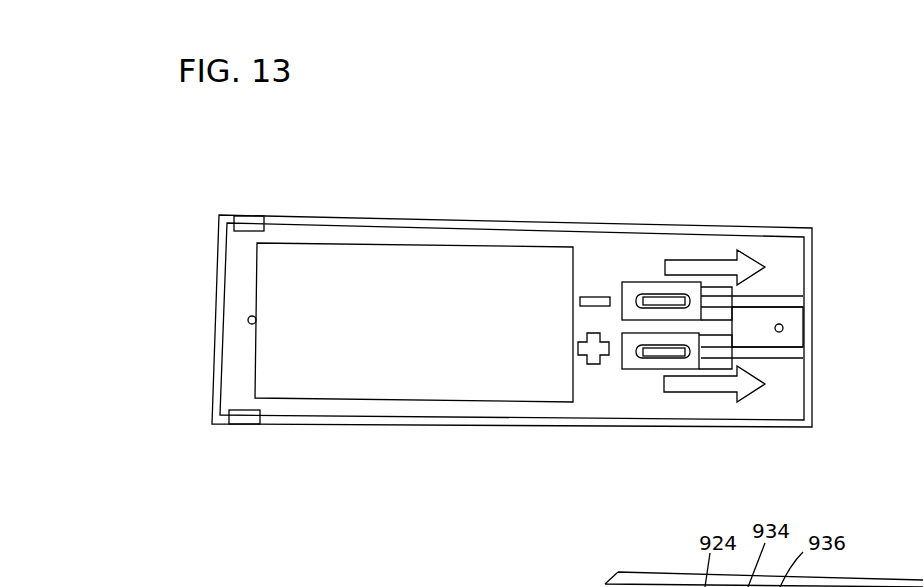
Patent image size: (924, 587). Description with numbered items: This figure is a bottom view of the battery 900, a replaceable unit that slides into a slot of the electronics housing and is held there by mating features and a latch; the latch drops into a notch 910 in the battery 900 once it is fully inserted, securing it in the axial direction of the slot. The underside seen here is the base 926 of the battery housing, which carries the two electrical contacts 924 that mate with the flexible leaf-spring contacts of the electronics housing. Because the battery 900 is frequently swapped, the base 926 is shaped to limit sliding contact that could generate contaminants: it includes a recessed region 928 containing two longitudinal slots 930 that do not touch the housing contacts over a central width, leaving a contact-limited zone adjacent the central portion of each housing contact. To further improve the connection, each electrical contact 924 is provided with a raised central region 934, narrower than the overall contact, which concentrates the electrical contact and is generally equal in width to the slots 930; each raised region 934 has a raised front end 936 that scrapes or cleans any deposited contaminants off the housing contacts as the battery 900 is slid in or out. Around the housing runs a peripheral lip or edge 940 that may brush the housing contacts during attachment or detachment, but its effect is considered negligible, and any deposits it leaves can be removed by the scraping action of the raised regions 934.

The battery 900 is at (482, 195).
The notch 910 is at (245, 430).
The base 926 is at (593, 262).
The electrical contacts 924 is at (628, 283).
The raised central region 934 is at (660, 300).
The raised front end 936 is at (687, 300).
The longitudinal slots 930 is at (784, 297).
The peripheral lip or edge 940 is at (802, 318).
The recessed region 928 is at (795, 331).